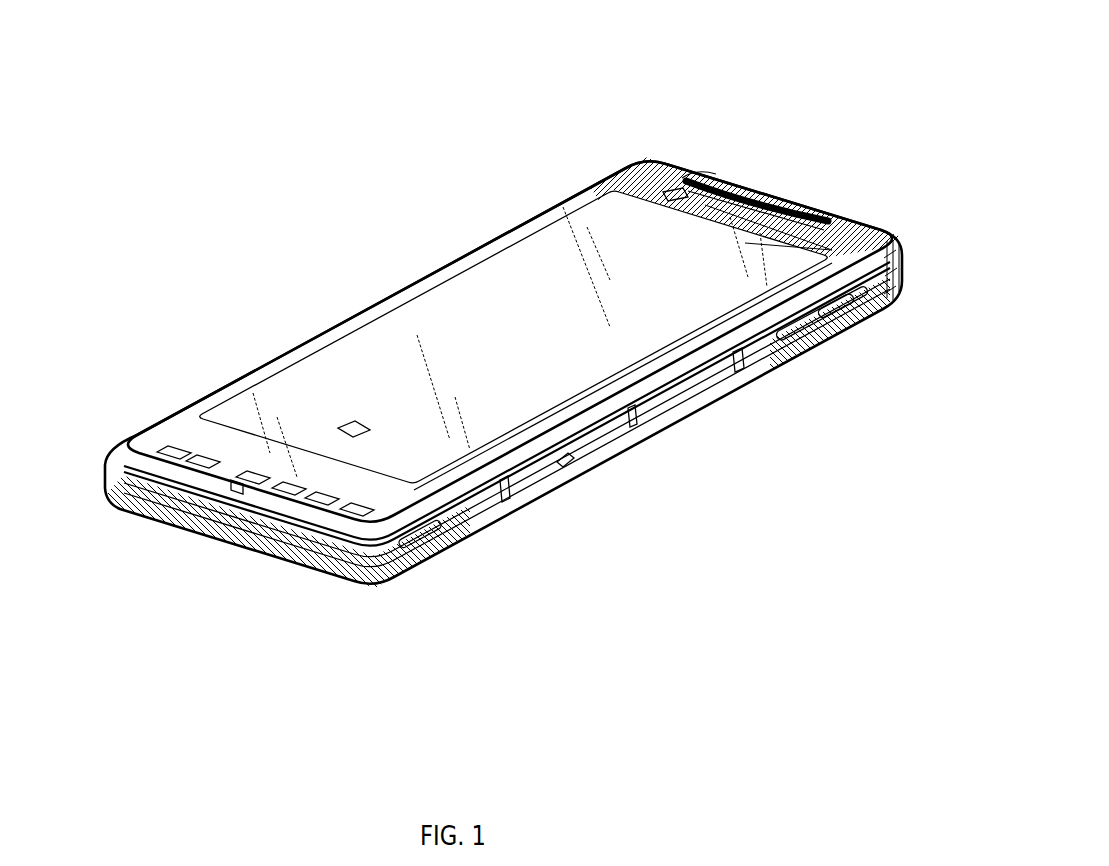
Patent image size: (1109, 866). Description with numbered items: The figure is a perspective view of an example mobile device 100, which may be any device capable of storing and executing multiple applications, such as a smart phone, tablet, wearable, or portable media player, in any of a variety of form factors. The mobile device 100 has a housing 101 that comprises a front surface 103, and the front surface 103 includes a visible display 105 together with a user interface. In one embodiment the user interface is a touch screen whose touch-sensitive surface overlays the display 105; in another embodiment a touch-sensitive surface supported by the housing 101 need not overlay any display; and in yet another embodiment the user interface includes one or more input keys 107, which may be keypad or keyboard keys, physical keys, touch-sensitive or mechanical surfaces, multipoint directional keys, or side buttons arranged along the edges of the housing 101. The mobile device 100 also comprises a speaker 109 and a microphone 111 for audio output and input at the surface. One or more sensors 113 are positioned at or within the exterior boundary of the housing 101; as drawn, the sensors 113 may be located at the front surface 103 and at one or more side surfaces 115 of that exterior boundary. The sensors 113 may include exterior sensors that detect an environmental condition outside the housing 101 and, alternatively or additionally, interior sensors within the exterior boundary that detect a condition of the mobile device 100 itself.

The mobile device 100 is at (812, 190).
The housing 101 is at (477, 250).
The front surface 103 is at (363, 487).
The display 105 is at (417, 332).
The input keys 107 is at (167, 455).
The speaker 109 is at (757, 197).
The microphone 111 is at (237, 488).
The sensors 113 is at (673, 190).
The side surfaces 115 is at (162, 508).